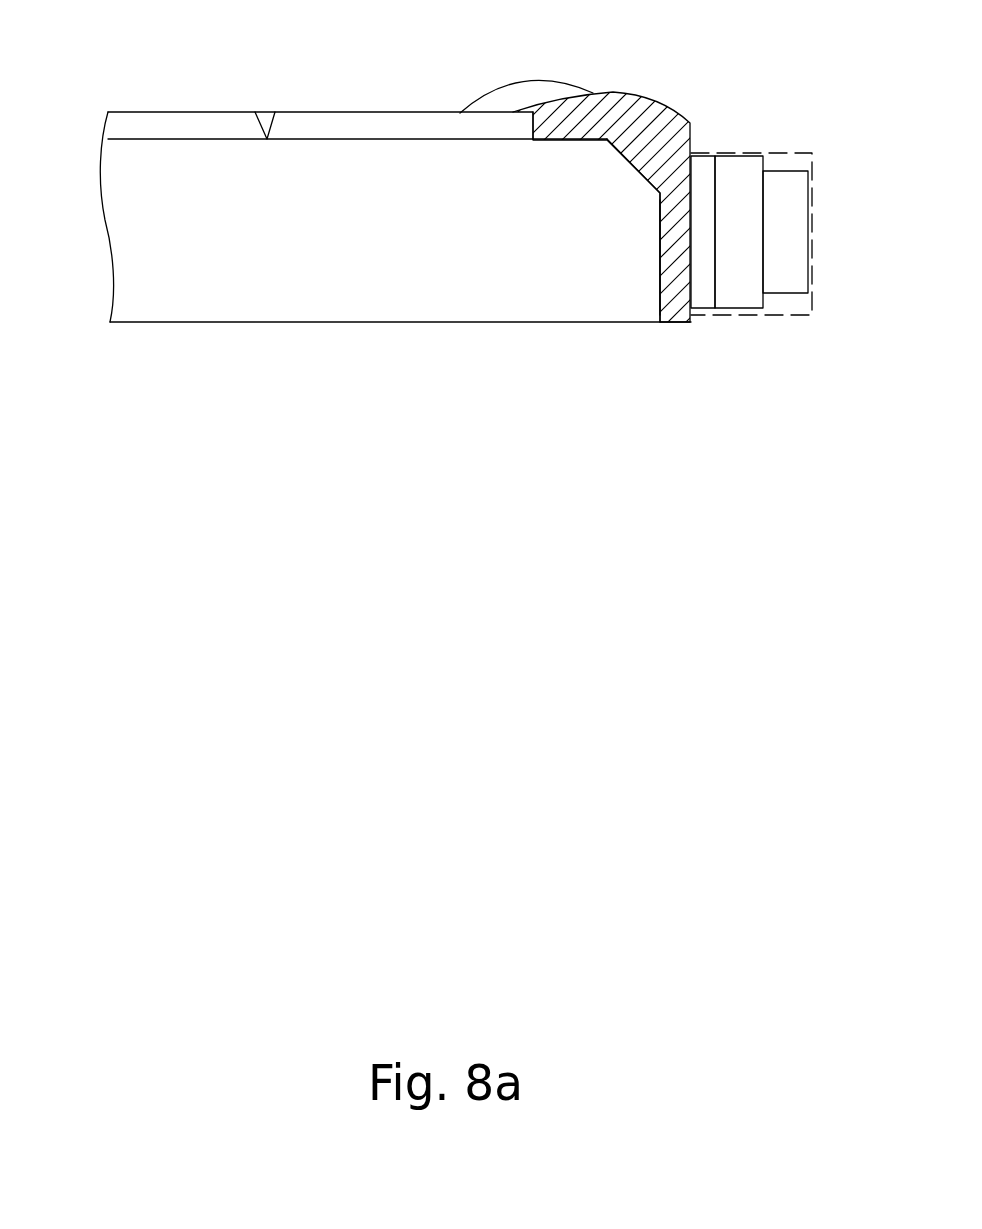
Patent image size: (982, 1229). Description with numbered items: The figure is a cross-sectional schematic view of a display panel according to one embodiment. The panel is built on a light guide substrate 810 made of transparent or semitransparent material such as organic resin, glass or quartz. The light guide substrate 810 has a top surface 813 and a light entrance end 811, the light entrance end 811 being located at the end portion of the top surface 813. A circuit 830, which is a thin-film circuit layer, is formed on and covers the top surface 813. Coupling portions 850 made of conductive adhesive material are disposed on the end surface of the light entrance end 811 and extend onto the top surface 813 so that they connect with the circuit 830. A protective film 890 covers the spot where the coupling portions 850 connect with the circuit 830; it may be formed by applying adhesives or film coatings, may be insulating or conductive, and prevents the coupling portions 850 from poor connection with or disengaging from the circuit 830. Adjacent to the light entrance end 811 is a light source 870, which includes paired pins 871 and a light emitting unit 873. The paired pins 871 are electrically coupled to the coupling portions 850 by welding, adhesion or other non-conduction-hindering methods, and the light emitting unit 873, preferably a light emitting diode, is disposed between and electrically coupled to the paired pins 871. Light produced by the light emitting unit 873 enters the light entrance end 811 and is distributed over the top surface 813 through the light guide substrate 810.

The light guide substrate 810 is at (123, 247).
The light entrance end 811 is at (648, 258).
The top surface 813 is at (267, 139).
The circuit 830 is at (117, 126).
The coupling portions 850 is at (632, 105).
The light source 870 is at (732, 152).
The paired pins 871 is at (742, 293).
The light emitting unit 873 is at (795, 243).
The protective film 890 is at (527, 90).